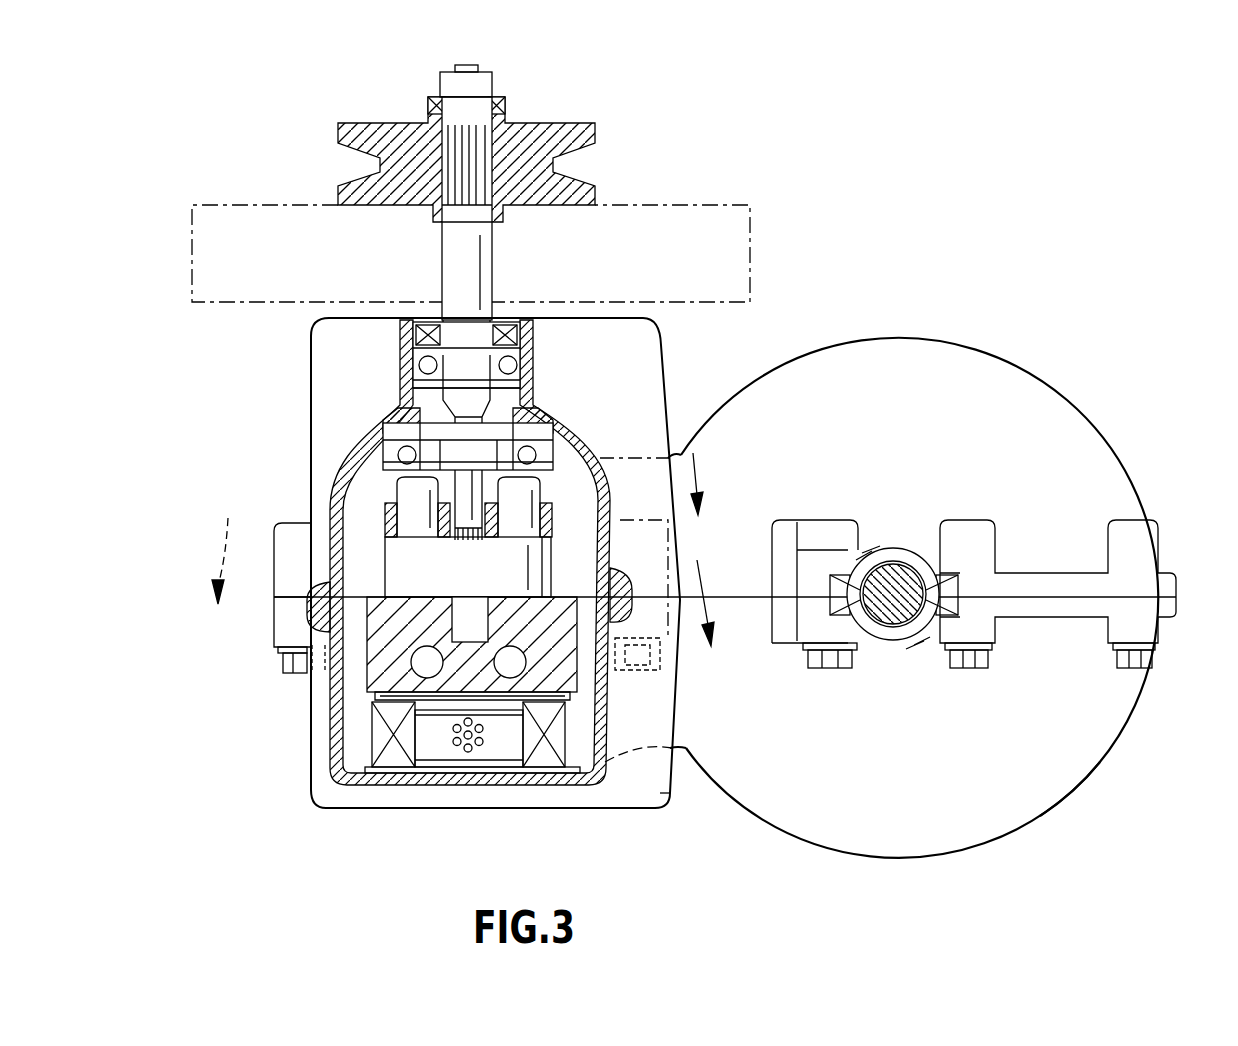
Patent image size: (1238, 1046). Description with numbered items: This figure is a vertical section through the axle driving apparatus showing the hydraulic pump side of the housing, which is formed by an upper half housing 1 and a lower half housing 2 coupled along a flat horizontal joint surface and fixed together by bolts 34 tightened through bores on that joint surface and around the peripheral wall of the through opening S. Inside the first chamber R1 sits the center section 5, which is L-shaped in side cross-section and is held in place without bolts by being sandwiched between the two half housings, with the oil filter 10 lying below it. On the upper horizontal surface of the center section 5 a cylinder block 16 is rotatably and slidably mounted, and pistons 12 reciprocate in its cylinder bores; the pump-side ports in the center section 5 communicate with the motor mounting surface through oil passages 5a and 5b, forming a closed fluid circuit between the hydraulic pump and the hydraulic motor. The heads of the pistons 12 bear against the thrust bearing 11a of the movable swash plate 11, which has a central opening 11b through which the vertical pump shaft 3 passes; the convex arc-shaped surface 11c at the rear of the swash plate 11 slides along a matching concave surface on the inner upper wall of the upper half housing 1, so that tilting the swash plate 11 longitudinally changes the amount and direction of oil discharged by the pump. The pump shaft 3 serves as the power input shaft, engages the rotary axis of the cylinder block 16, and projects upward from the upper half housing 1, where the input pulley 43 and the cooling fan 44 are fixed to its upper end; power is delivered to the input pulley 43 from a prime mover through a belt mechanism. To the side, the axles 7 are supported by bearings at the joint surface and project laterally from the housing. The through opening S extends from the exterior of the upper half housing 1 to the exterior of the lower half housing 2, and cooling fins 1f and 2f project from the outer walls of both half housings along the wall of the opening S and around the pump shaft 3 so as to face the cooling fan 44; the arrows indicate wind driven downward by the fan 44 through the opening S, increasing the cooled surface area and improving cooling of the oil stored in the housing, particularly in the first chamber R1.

The upper half housing 1 is at (985, 346).
The cooling fins 1f is at (658, 382).
The lower half housing 2 is at (1078, 781).
The cooling fins 2f is at (670, 795).
The pump shaft 3 is at (492, 252).
The center section 5 is at (338, 630).
The oil passage 5a is at (367, 662).
The oil passage 5b is at (523, 665).
The axles 7 is at (908, 548).
The oil filter 10 is at (372, 742).
The movable swash plate 11 is at (560, 426).
The thrust bearing 11a is at (343, 473).
The opening 11b is at (394, 402).
The convex arc-shaped surface 11c is at (540, 390).
The pistons 12 is at (399, 490).
The cylinder block 16 is at (548, 577).
The bolts 34 is at (282, 668).
The input pulley 43 is at (597, 135).
The cooling fan 44 is at (752, 205).
The first chamber R1 is at (376, 576).
The through opening S is at (740, 576).